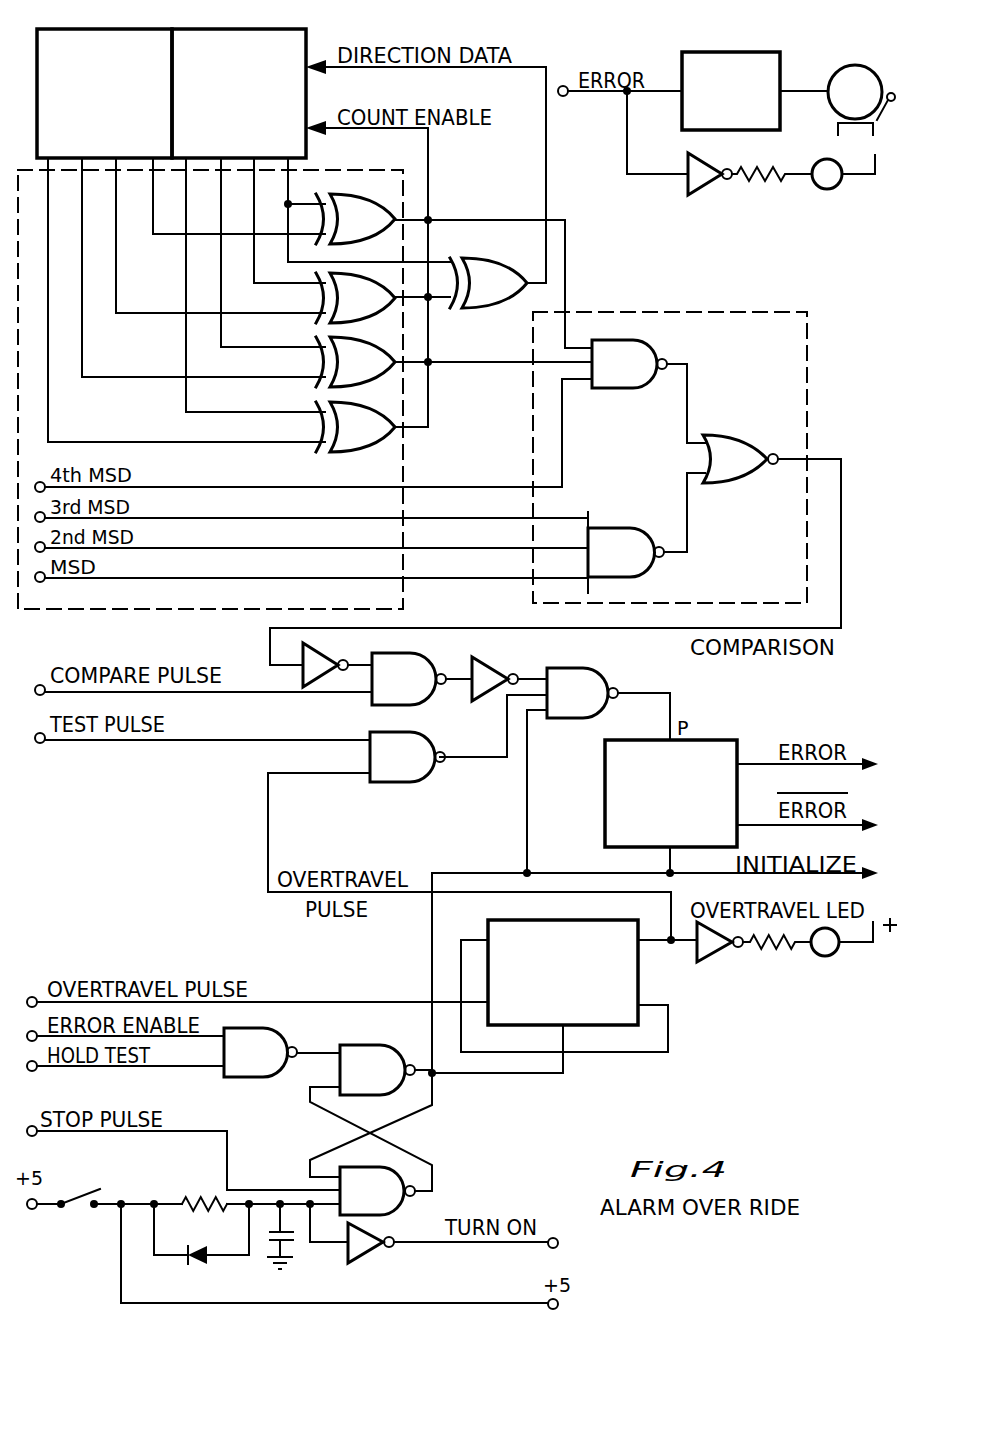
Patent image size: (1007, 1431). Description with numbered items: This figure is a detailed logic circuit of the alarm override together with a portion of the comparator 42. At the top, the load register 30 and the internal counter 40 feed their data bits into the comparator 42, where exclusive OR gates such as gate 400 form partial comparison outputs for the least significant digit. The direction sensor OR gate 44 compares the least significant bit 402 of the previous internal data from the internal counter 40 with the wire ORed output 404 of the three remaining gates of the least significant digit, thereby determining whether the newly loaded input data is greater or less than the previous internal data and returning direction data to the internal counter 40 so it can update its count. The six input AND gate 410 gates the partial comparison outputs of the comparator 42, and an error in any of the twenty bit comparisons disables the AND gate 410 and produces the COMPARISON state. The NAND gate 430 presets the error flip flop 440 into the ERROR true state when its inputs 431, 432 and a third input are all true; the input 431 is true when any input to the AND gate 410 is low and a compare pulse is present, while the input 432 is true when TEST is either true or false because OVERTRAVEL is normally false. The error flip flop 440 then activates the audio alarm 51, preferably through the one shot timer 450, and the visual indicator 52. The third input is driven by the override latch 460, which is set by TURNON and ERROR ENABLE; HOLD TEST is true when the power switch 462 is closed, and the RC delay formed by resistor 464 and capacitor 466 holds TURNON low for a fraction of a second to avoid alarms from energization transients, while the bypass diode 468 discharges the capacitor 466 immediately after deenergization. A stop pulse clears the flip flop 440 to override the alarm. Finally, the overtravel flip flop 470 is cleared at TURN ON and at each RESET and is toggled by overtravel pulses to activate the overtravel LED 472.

The load register 30 is at (93, 131).
The internal counter 40 is at (228, 131).
The comparator 42 is at (210, 389).
The direction sensor OR gate 44 is at (493, 296).
The audio alarm 51 is at (858, 65).
The visual indicator 52 is at (836, 185).
The exclusive OR gate 400 is at (450, 221).
The least significant bit 402 is at (400, 260).
The wire ORed output 404 is at (430, 334).
The six input AND gate 410 is at (723, 342).
The NAND gate 430 is at (586, 701).
The input 431 is at (525, 679).
The input 432 is at (506, 722).
The error flip flop 440 is at (718, 738).
The one shot timer 450 is at (739, 122).
The override latch 460 is at (403, 1135).
The power switch 462 is at (80, 1204).
The resistor 464 is at (205, 1199).
The capacitor 466 is at (300, 1245).
The bypass diode 468 is at (186, 1252).
The overtravel flip flop 470 is at (640, 980).
The overtravel LED 472 is at (834, 953).